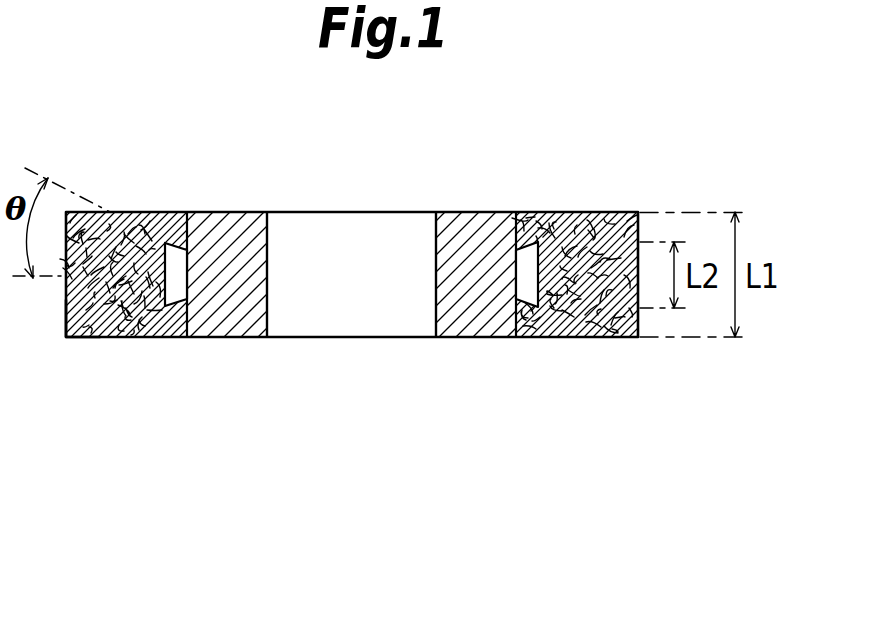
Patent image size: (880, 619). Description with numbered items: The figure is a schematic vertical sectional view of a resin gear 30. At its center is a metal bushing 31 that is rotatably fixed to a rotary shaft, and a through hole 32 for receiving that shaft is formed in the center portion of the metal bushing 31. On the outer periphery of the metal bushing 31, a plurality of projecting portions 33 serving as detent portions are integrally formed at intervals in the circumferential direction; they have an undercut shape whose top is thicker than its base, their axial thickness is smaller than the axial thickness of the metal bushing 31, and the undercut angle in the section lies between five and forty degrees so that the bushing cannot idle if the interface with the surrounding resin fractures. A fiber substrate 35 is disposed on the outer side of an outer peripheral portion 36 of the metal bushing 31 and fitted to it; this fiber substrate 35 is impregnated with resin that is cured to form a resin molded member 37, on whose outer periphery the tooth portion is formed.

The resin gear 30 is at (564, 183).
The metal bushing 31 is at (232, 232).
The through hole 32 is at (435, 313).
The projecting portions 33 is at (143, 306).
The fiber substrate 35 is at (114, 315).
The outer peripheral portion 36 is at (531, 325).
The resin molded member 37 is at (93, 312).